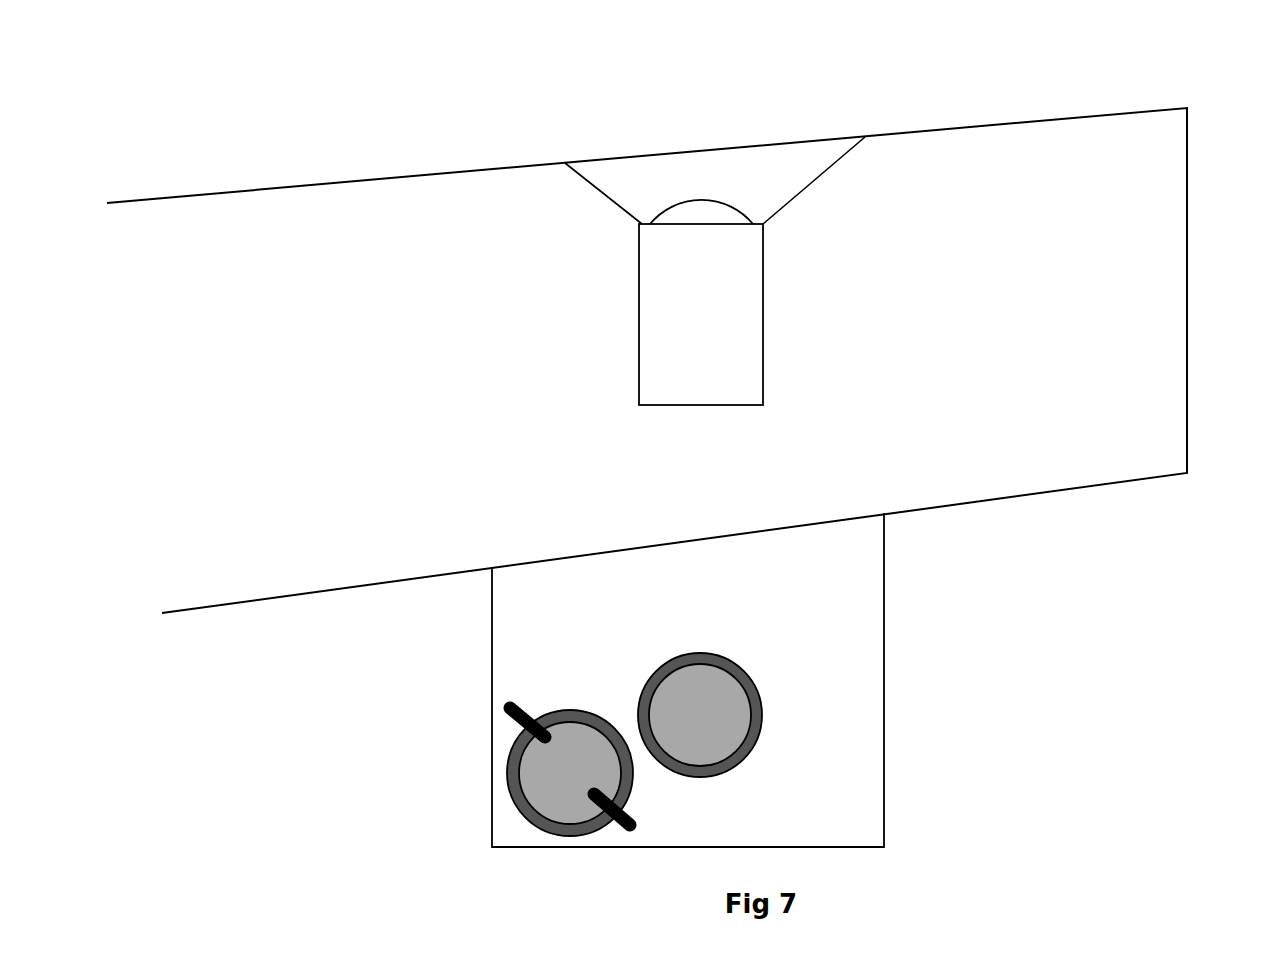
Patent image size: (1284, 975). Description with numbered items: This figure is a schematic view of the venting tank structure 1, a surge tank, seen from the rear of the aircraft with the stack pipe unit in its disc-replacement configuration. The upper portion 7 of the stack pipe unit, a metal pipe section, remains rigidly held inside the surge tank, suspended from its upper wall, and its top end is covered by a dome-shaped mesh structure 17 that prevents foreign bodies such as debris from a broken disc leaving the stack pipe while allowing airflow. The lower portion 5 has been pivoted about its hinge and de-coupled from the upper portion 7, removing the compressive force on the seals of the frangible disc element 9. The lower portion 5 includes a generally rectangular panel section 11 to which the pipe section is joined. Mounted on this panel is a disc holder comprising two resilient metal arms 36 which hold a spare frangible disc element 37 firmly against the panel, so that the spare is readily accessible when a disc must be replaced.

The venting tank structure 1 is at (264, 366).
The lower portion 5 is at (775, 676).
The upper portion 7 is at (768, 310).
The frangible disc element 9 is at (715, 707).
The panel section 11 is at (518, 684).
The dome-shaped mesh structure 17 is at (722, 200).
The resilient metal arms 36 is at (583, 803).
The spare frangible disc element 37 is at (503, 807).